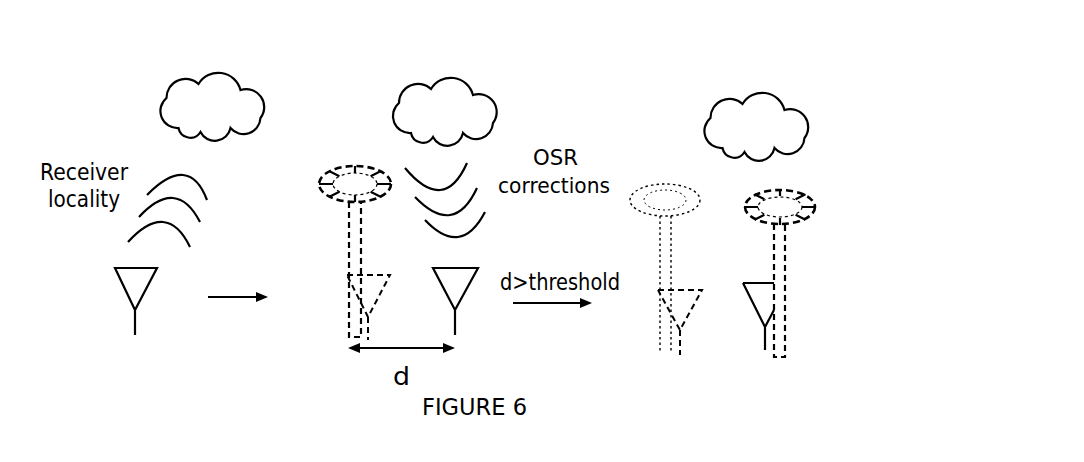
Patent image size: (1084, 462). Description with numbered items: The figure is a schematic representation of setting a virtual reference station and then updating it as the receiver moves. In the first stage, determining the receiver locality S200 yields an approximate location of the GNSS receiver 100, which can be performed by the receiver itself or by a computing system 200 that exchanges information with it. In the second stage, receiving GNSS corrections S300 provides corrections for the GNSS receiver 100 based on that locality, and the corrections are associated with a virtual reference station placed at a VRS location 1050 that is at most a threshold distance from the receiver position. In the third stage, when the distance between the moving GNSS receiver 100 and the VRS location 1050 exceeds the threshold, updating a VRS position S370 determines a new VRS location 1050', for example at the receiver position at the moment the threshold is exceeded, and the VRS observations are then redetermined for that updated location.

The GNSS receiver 100 is at (102, 304).
The computing system 200 is at (192, 97).
The VRS location 1050 is at (339, 231).
The new VRS location 1050' is at (832, 273).
The determining the receiver locality S200 is at (239, 42).
The receiving GNSS corrections S300 is at (552, 104).
The updating a VRS position S370 is at (866, 127).